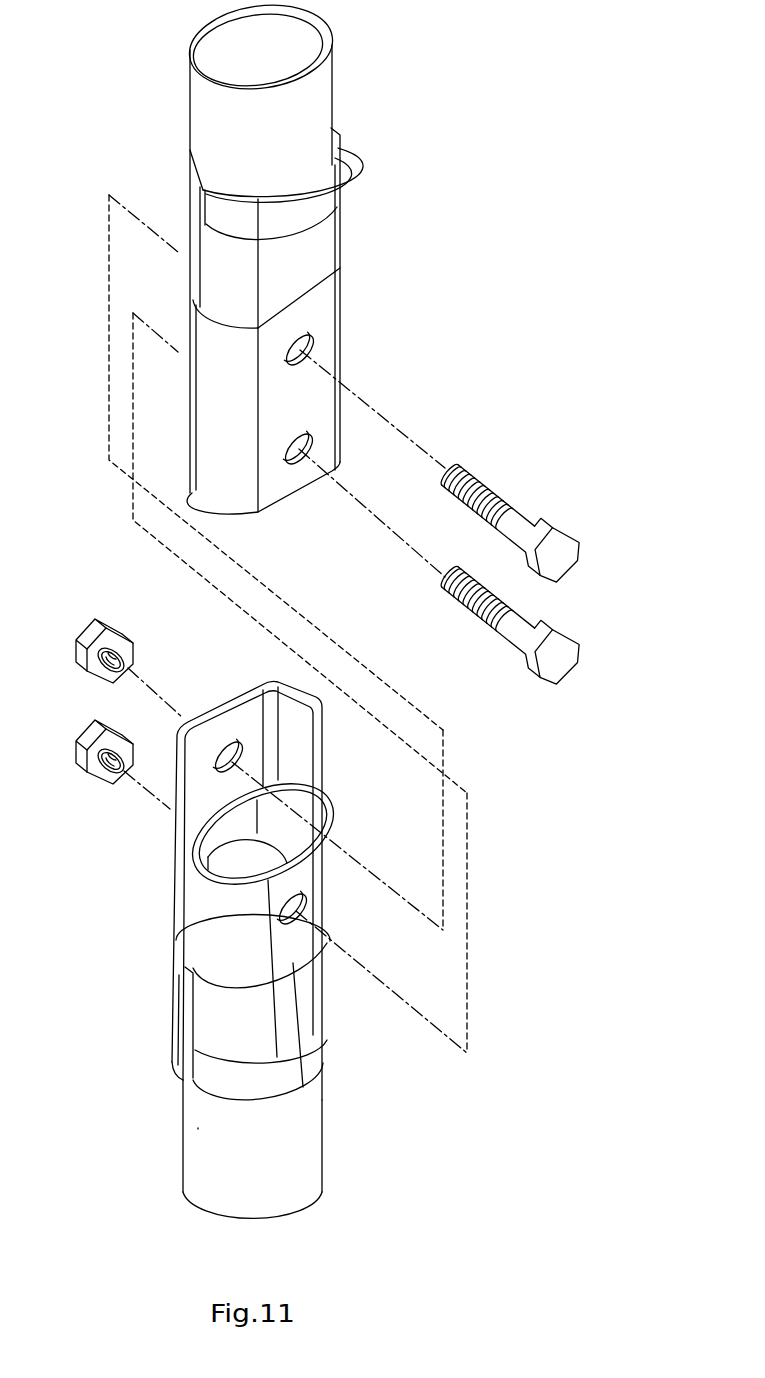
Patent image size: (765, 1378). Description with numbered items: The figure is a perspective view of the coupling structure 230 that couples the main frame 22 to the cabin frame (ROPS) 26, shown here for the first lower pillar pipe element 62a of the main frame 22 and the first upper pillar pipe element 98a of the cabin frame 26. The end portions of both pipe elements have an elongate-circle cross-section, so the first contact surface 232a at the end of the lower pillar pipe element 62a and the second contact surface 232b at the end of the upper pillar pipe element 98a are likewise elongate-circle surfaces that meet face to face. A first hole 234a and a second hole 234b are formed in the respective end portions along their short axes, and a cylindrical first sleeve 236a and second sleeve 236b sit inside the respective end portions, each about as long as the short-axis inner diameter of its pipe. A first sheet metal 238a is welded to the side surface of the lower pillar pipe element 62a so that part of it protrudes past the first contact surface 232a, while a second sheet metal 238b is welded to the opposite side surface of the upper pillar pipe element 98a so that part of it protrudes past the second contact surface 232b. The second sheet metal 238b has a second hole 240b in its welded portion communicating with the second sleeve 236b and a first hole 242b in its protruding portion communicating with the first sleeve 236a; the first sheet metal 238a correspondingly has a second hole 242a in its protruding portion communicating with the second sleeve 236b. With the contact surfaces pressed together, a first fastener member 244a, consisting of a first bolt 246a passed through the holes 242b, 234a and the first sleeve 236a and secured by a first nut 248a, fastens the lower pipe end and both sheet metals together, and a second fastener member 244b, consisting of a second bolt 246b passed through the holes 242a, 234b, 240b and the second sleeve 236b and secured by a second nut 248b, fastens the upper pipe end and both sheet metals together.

The cabin frame (ROPS) 26 is at (186, 78).
The first upper pillar pipe element 98a is at (200, 128).
The coupling structure 230 is at (372, 155).
The second sheet metal 238b is at (325, 245).
The second hole 240b is at (314, 341).
The second sleeve 236b is at (308, 353).
The second hole 234b is at (344, 420).
The first hole 242b is at (301, 462).
The second contact surface 232b is at (192, 402).
The first contact surface 232a is at (330, 814).
The second fastener member 244b is at (539, 525).
The second bolt 246b is at (566, 558).
The first fastener member 244a is at (539, 627).
The first bolt 246a is at (566, 660).
The second nut 248b is at (97, 637).
The first nut 248a is at (97, 738).
The first sheet metal 238a is at (176, 999).
The second hole 242a is at (230, 743).
The first hole 234a is at (283, 923).
The first sleeve 236a is at (243, 867).
The main frame 22 is at (183, 1158).
The first lower pillar pipe element 62a is at (198, 1128).